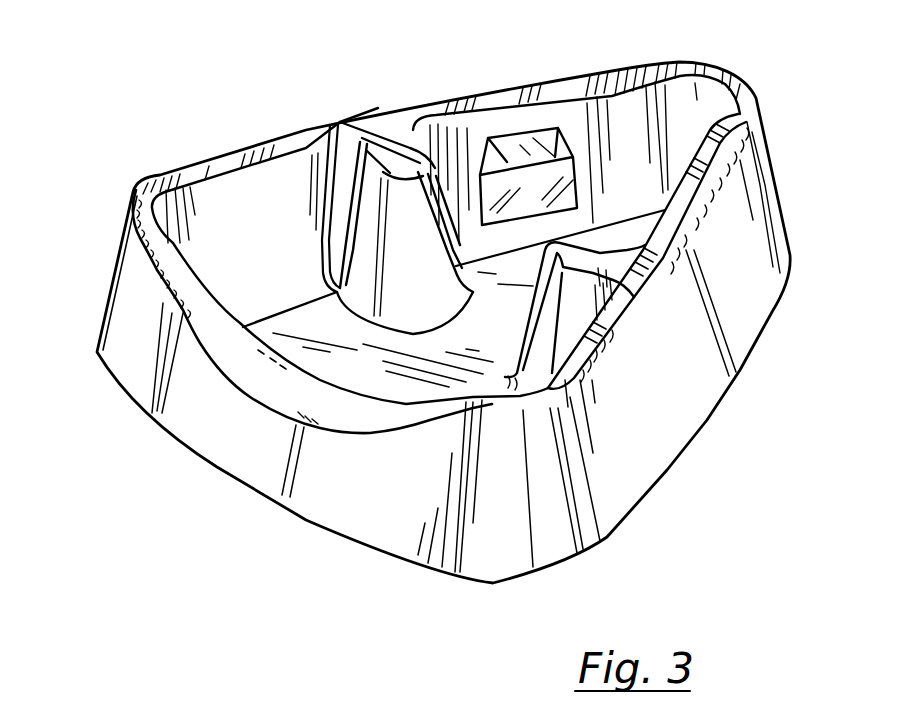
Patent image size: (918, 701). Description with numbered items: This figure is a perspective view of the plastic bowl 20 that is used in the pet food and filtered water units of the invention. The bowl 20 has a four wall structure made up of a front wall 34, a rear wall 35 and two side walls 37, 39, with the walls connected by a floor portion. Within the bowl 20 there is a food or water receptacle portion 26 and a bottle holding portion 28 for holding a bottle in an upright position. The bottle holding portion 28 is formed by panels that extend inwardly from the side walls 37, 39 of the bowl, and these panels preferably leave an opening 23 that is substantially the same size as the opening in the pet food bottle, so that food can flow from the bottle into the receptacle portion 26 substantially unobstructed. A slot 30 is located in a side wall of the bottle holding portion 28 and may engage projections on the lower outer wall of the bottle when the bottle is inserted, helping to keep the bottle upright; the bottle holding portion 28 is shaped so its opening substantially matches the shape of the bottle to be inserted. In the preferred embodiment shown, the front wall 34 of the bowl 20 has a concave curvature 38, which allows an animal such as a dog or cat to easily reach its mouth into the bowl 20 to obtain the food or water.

The bowl 20 is at (130, 126).
The opening 23 is at (516, 314).
The food or water receptacle portion 26 is at (339, 380).
The bottle holding portion 28 is at (490, 291).
The slot 30 is at (512, 147).
The front wall 34 is at (217, 468).
The rear wall 35 is at (745, 82).
The side wall 37 is at (378, 111).
The concave curvature 38 is at (157, 270).
The side wall 39 is at (685, 421).